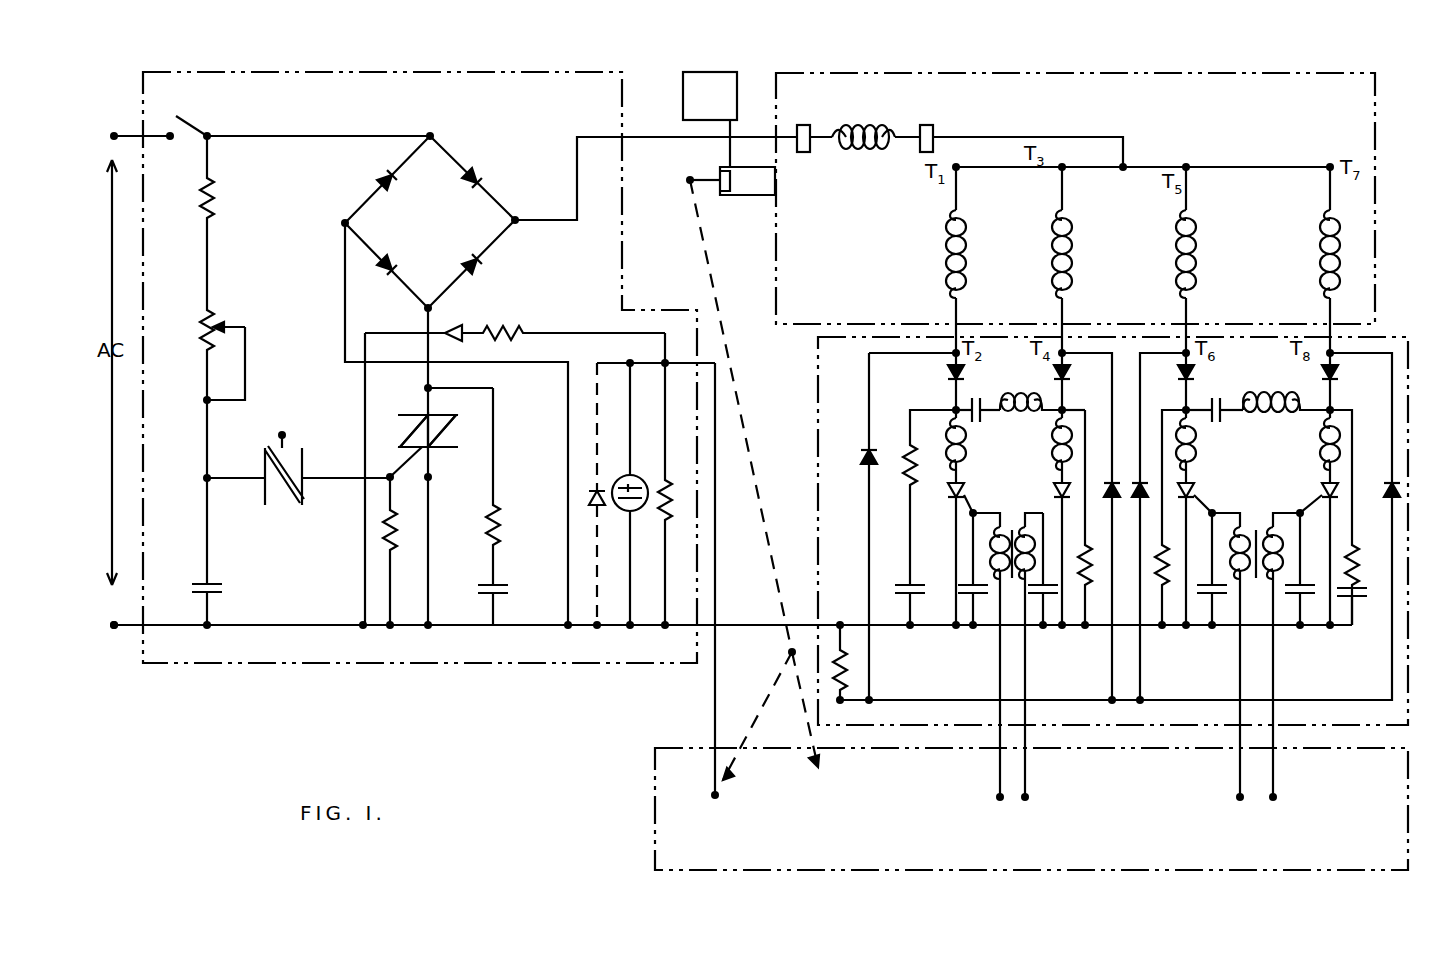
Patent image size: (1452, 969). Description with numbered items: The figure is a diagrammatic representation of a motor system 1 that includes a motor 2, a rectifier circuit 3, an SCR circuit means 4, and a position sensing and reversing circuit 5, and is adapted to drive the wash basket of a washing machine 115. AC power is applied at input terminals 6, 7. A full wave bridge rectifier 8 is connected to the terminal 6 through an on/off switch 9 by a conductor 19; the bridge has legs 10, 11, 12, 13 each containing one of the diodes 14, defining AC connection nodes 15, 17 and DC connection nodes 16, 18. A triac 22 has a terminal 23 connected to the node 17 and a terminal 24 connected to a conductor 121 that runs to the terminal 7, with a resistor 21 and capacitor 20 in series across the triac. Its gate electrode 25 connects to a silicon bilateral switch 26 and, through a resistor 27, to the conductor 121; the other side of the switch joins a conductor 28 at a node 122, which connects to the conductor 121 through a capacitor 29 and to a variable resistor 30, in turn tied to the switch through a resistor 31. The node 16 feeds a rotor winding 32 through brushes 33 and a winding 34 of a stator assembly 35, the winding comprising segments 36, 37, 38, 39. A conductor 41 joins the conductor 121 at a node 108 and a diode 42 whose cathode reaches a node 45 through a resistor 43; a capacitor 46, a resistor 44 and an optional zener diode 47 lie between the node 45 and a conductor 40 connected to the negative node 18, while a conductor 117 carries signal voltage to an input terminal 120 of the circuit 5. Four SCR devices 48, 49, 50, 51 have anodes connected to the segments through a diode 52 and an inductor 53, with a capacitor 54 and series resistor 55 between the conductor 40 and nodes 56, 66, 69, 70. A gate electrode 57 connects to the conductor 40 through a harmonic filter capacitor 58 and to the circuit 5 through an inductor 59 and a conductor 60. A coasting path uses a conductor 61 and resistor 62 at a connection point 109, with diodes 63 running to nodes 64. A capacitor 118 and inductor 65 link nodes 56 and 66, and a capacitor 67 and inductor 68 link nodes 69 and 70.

The motor system 1 is at (614, 66).
The motor 2 is at (995, 120).
The rectifier circuit 3 is at (502, 126).
The SCR circuit means 4 is at (866, 437).
The position sensing and reversing circuit 5 is at (800, 816).
The input terminal 6 is at (105, 136).
The input terminal 7 is at (106, 637).
The full wave bridge rectifier 8 is at (430, 222).
The on/off switch 9 is at (204, 132).
The leg 10 is at (450, 168).
The leg 11 is at (452, 286).
The leg 12 is at (366, 250).
The leg 13 is at (350, 214).
The diode 14 is at (456, 254).
The AC connection node 15 is at (432, 136).
The DC connection node 16 is at (520, 230).
The AC connection node 17 is at (451, 343).
The DC connection node 18 is at (344, 223).
The conductor 19 is at (318, 136).
The capacitor 20 is at (496, 588).
The resistor 21 is at (500, 518).
The triac 22 is at (440, 420).
The terminal 23 is at (424, 386).
The terminal 24 is at (453, 549).
The gate electrode 25 is at (416, 456).
The silicon bilateral switch 26 is at (286, 462).
The resistor 27 is at (392, 505).
The conductor 28 is at (206, 440).
The capacitor 29 is at (200, 584).
The variable resistor 30 is at (200, 327).
The resistor 31 is at (212, 192).
The rotor winding 32 is at (852, 125).
The brushes 33 is at (938, 130).
The winding 34 is at (1238, 167).
The stator assembly 35 is at (1178, 152).
The winding segment 36 is at (966, 258).
The winding segment 37 is at (1072, 258).
The winding segment 38 is at (1196, 258).
The winding segment 39 is at (1340, 258).
The conductor 40 is at (768, 625).
The conductor 41 is at (376, 340).
The diode 42 is at (448, 326).
The resistor 43 is at (506, 333).
The resistor 44 is at (672, 488).
The node 45 is at (667, 360).
The capacitor 46 is at (640, 484).
The zener diode 47 is at (595, 486).
The SCR device 48 is at (962, 484).
The SCR device 49 is at (1056, 484).
The SCR device 50 is at (1198, 490).
The SCR device 51 is at (1338, 492).
The diode 52 is at (1336, 374).
The inductor 53 is at (1318, 470).
The capacitor 54 is at (1362, 594).
The resistor 55 is at (1350, 560).
The node 56 is at (952, 402).
The gate electrode 57 is at (976, 502).
The capacitor 58 is at (1040, 626).
The inductor 59 is at (1262, 534).
The conductor 60 is at (1272, 698).
The conductor 61 is at (1158, 700).
The resistor 62 is at (846, 674).
The diode 63 is at (1400, 492).
The node 64 is at (1332, 352).
The inductor 65 is at (1000, 402).
The node 66 is at (1066, 414).
The capacitor 67 is at (1214, 404).
The inductor 68 is at (1254, 402).
The node 69 is at (1184, 410).
The node 70 is at (1334, 414).
The node 108 is at (363, 628).
The connection point 109 is at (856, 610).
The washing machine 115 is at (728, 72).
The conductor 117 is at (716, 556).
The capacitor 118 is at (980, 414).
The input terminal 120 is at (718, 800).
The conductor 121 is at (258, 623).
The node 122 is at (206, 486).